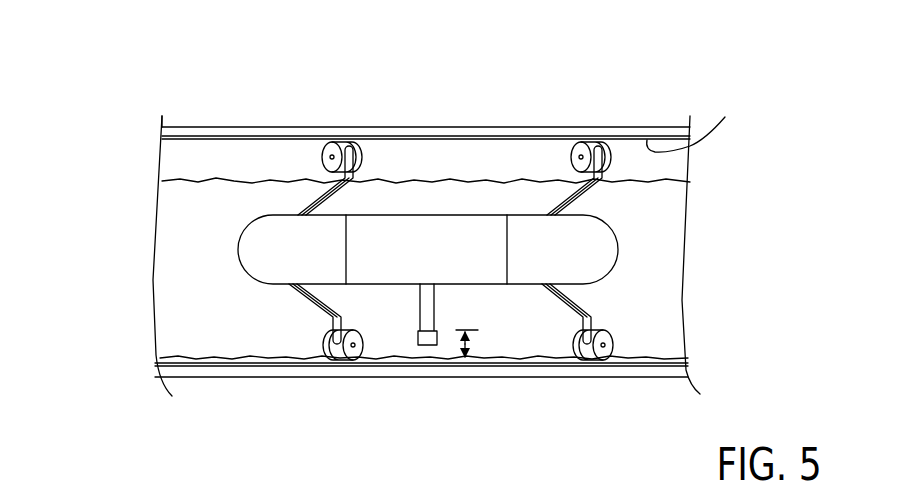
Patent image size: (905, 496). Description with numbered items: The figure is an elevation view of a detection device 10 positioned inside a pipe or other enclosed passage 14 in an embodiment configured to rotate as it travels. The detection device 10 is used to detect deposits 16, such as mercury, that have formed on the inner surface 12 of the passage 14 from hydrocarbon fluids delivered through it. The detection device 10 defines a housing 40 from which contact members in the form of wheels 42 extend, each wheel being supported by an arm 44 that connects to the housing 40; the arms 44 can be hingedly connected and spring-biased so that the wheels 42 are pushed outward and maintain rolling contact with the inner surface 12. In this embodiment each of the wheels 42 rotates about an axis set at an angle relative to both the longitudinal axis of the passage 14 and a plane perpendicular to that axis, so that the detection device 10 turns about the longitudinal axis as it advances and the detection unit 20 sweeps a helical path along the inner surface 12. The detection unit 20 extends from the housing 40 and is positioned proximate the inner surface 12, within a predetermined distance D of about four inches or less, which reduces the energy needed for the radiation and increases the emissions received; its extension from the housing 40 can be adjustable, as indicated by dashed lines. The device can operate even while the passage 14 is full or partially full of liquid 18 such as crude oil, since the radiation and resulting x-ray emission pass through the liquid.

The detection device 10 is at (665, 218).
The inner surface 12 is at (220, 141).
The passage 14 is at (648, 127).
The deposits 16 is at (232, 357).
The liquid 18 is at (251, 177).
The detection unit 20 is at (412, 321).
The housing 40 is at (606, 281).
The wheels 42 is at (365, 155).
The arms 44 is at (318, 199).
The predetermined distance D is at (467, 346).